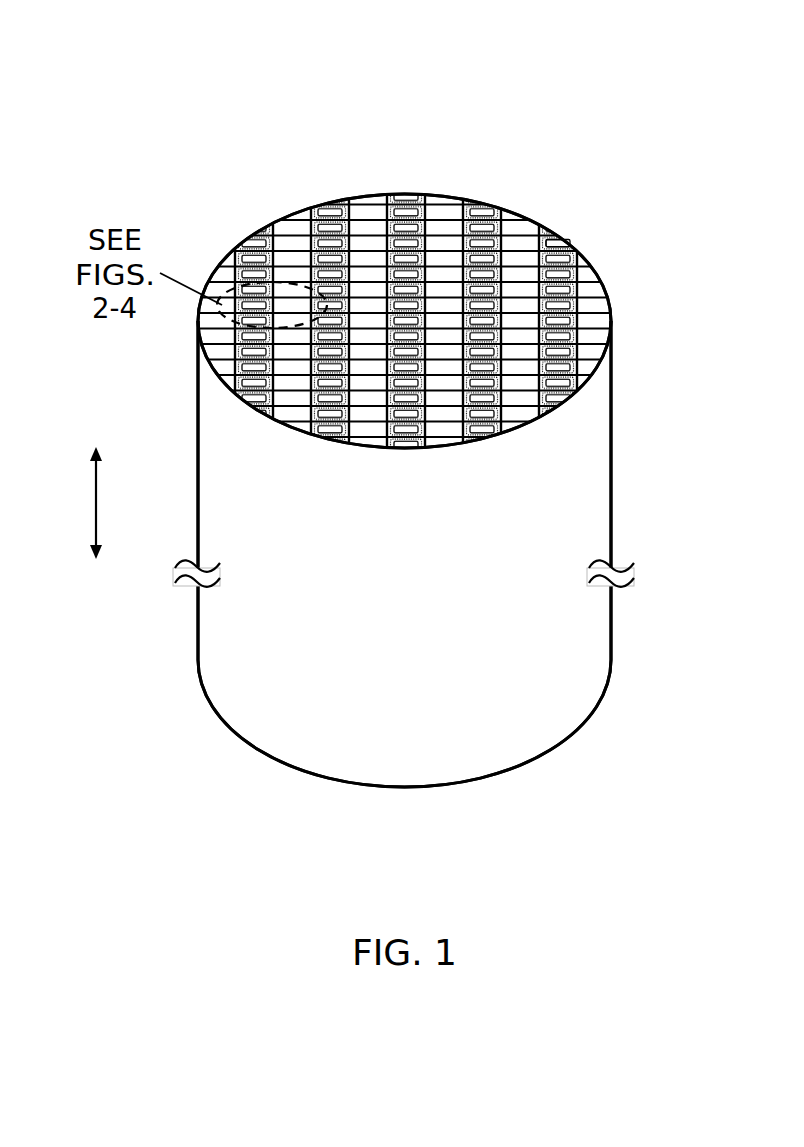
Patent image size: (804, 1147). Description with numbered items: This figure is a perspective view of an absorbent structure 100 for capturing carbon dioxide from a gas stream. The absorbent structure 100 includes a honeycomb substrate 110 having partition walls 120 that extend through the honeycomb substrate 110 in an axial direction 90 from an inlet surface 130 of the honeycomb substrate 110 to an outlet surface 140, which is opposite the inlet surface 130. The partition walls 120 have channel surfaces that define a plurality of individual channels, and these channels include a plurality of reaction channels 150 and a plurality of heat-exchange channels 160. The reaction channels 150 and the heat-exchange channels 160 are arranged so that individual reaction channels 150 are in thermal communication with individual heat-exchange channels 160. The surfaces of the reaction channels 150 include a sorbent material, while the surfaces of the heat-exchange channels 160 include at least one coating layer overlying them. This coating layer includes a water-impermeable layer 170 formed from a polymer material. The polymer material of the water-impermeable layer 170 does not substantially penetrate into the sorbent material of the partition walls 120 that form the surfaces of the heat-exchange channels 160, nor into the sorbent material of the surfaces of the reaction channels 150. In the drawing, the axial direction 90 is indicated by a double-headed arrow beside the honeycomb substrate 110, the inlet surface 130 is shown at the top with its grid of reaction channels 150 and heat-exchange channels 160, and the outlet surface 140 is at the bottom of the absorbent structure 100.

The axial direction 90 is at (95, 518).
The absorbent structure 100 is at (626, 126).
The honeycomb substrate 110 is at (612, 465).
The partition walls 120 is at (518, 233).
The inlet surface 130 is at (588, 320).
The outlet surface 140 is at (438, 800).
The reaction channels 150 is at (365, 412).
The heat-exchange channels 160 is at (330, 220).
The water-impermeable layer 170 is at (557, 246).